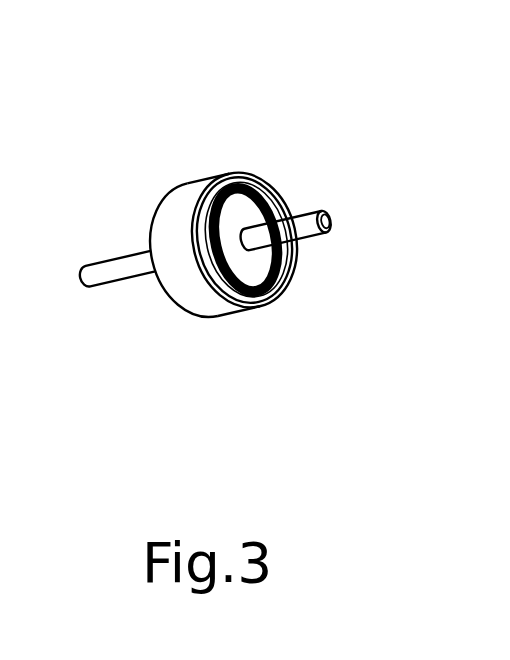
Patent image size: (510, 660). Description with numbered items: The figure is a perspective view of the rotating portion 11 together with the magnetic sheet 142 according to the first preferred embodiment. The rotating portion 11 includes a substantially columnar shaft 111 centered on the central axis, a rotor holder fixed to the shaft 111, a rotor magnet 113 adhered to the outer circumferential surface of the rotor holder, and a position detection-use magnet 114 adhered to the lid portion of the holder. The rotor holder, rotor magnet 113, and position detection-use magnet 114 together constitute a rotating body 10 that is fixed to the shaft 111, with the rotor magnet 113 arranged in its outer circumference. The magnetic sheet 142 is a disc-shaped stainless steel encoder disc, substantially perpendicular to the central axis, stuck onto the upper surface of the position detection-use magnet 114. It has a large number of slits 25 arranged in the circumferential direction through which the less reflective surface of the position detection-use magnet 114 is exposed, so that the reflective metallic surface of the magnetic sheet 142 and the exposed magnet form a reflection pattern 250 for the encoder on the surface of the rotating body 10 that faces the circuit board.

The rotating body 10 is at (222, 333).
The rotating portion 11 is at (113, 100).
The shaft 111 is at (105, 273).
The rotor magnet 113 is at (178, 197).
The position detection-use magnet 114 is at (205, 193).
The magnetic sheet 142 is at (255, 182).
The slits 25 is at (277, 287).
The reflection pattern 250 is at (308, 263).